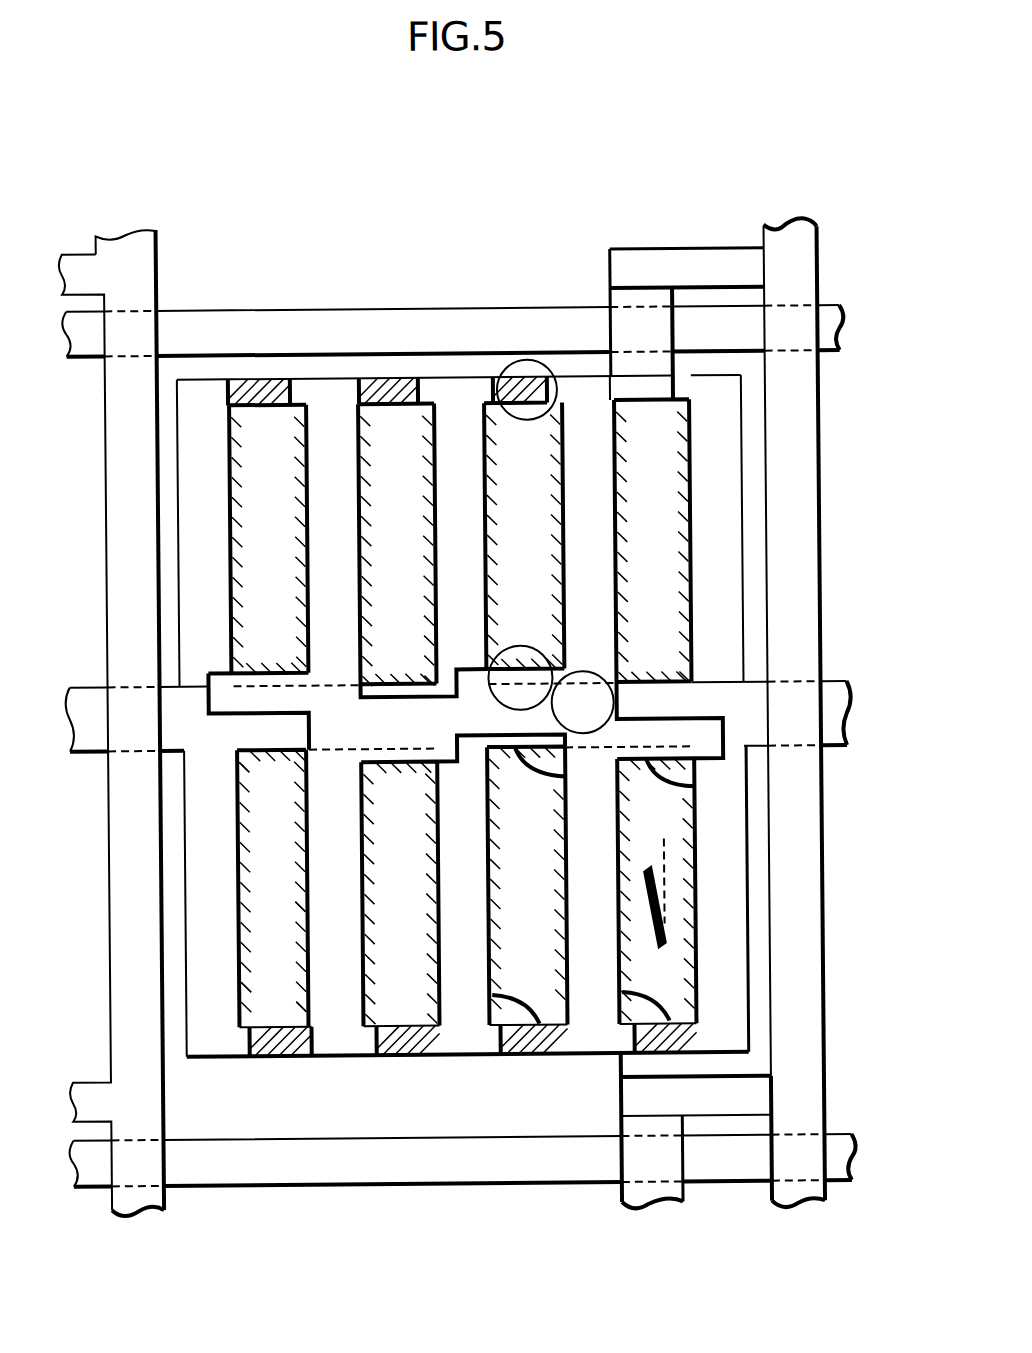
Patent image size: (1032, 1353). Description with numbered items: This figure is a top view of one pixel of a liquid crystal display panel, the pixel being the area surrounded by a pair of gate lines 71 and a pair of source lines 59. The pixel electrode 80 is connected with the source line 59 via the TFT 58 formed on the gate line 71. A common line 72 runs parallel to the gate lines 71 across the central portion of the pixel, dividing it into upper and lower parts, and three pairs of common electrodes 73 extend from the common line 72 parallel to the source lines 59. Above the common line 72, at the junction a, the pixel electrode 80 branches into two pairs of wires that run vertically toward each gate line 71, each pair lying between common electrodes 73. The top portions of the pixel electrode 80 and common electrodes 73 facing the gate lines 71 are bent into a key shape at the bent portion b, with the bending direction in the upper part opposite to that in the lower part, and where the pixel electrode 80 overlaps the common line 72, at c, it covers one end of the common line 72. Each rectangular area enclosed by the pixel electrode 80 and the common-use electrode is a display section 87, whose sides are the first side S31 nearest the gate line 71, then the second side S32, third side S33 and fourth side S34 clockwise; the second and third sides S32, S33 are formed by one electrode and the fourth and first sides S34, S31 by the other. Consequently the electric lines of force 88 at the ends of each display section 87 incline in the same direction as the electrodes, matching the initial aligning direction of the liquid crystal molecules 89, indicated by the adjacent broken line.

The TFT 58 is at (607, 257).
The source line 59 is at (132, 253).
The gate line 71 is at (845, 318).
The common line 72 is at (735, 713).
The common electrode 73 is at (713, 567).
The pixel electrode 80 is at (586, 392).
The display section 87 is at (265, 483).
The electric line of force 88 is at (653, 995).
The liquid crystal molecule 89 is at (662, 920).
The junction a is at (597, 673).
The bent portion b is at (523, 372).
The overlap portion c is at (522, 648).
The first side S31 is at (283, 1025).
The second side S32 is at (238, 988).
The third side S33 is at (268, 753).
The fourth side S34 is at (312, 910).